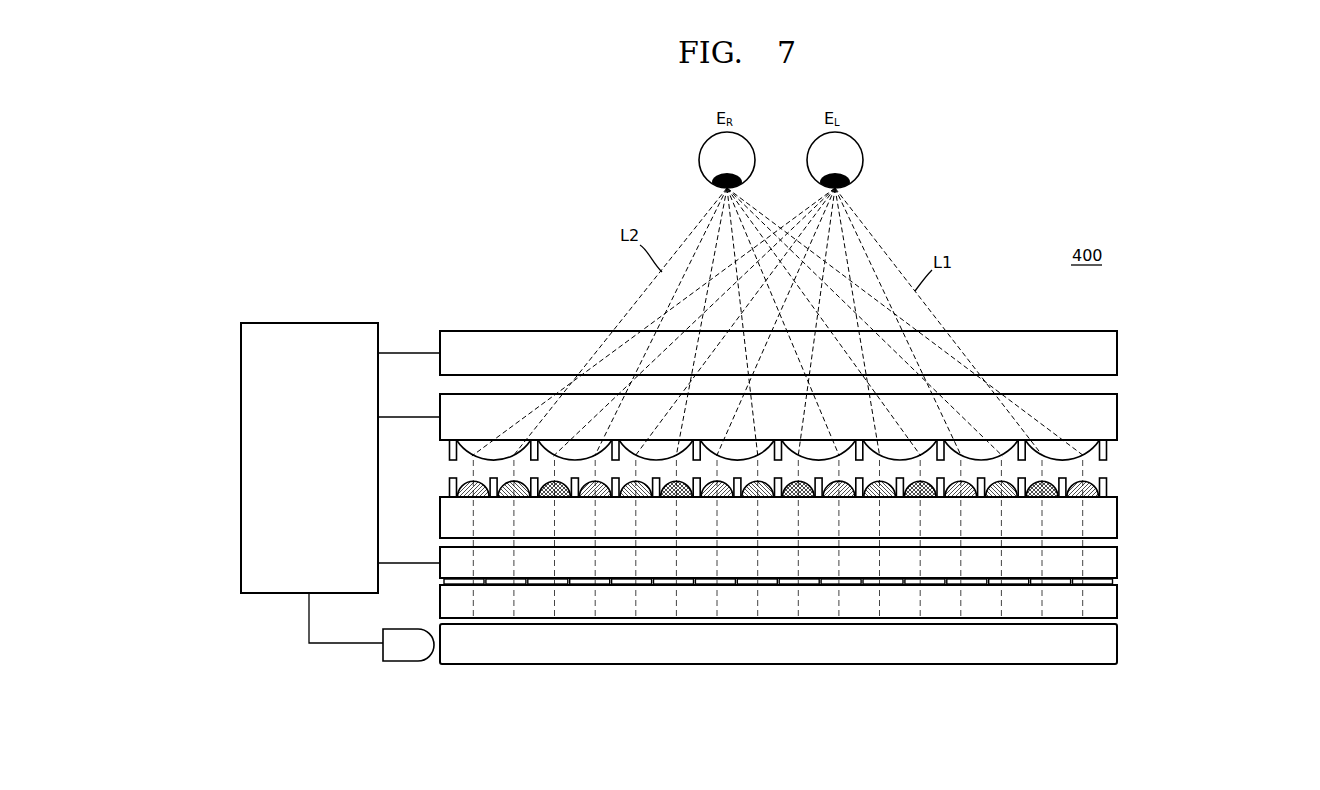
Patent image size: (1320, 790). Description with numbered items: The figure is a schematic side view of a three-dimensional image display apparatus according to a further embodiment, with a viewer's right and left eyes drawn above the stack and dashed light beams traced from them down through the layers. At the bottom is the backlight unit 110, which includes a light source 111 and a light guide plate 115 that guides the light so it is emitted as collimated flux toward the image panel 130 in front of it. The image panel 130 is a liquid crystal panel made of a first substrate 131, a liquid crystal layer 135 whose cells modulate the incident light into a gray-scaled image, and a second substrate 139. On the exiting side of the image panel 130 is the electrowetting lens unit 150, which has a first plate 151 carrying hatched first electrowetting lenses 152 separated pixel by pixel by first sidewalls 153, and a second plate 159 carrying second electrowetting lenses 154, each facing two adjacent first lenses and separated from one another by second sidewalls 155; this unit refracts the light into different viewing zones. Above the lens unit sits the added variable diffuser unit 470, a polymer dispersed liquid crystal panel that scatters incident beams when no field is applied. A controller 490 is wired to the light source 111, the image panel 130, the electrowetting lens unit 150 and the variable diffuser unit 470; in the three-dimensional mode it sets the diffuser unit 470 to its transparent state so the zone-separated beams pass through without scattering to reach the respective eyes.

The controller 490 is at (309, 323).
The light source 111 is at (403, 662).
The backlight unit 110 is at (844, 644).
The light guide plate 115 is at (1117, 647).
The image panel 130 is at (844, 582).
The first substrate 131 is at (1117, 602).
The liquid crystal layer 135 is at (1113, 582).
The second substrate 139 is at (1117, 559).
The electrowetting lens unit 150 is at (844, 466).
The first plate 151 is at (1117, 521).
The first electrowetting lenses 152 is at (1107, 479).
The first sidewalls 153 is at (1108, 492).
The second electrowetting lenses 154 is at (1108, 458).
The second sidewalls 155 is at (1107, 445).
The second plate 159 is at (1117, 408).
The variable diffuser unit 470 is at (1117, 357).